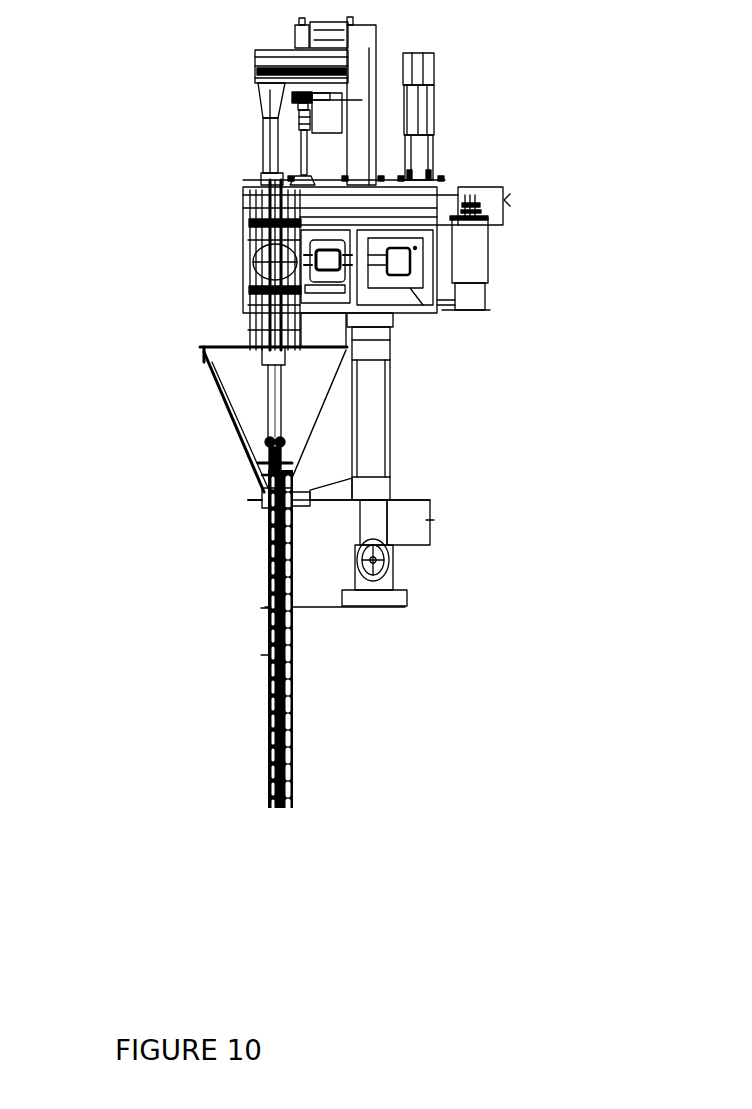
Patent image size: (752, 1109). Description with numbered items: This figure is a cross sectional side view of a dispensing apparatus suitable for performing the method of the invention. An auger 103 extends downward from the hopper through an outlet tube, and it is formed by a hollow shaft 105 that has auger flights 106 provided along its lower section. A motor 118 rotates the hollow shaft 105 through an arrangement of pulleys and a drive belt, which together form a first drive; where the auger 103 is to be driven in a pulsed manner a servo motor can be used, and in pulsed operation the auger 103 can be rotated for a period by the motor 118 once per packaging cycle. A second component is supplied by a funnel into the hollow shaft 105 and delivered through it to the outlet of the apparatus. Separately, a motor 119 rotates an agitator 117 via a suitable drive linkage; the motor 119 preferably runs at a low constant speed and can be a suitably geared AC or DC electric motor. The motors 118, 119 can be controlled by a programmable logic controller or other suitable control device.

The auger 103 is at (253, 563).
The hollow shaft 105 is at (277, 418).
The auger flights 106 is at (267, 657).
The agitator 117 is at (220, 392).
The motor 118 is at (495, 270).
The motor 119 is at (410, 290).